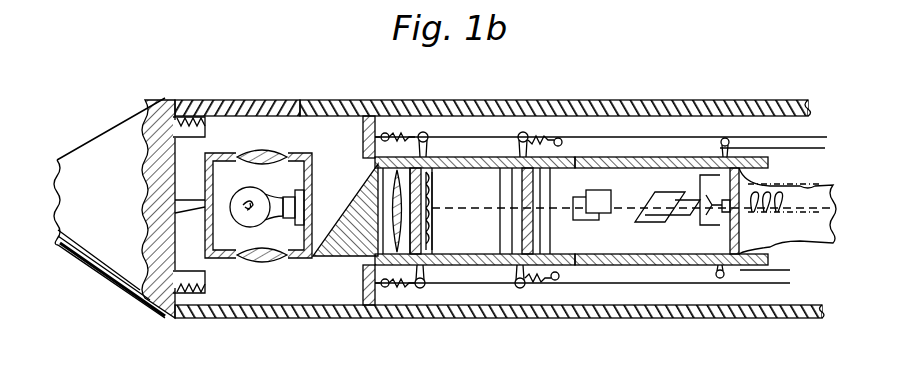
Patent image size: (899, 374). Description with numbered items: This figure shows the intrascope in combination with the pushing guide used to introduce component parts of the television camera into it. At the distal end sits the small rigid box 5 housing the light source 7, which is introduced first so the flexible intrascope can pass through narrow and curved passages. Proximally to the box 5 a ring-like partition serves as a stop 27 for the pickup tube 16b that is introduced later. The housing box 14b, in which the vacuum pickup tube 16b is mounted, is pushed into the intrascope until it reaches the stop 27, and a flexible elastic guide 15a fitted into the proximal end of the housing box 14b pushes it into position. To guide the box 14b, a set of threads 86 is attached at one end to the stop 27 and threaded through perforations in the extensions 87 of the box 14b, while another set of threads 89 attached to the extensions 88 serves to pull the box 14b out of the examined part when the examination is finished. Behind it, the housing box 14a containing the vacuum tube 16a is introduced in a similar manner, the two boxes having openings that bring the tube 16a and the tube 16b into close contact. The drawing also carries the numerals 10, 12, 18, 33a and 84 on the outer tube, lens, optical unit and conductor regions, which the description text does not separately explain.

The box 5 is at (302, 154).
The light source 7 is at (240, 225).
The condenser lens 10 is at (250, 150).
The outer tube 12 is at (250, 100).
The outer tube section 18 is at (340, 100).
The stop 27 is at (370, 147).
The optical unit 33a is at (453, 210).
The housing box 14a is at (670, 157).
The housing box 14b is at (460, 157).
The flexible elastic guide 15a is at (805, 238).
The vacuum tube 16a is at (620, 180).
The vacuum pickup tube 16b is at (485, 240).
The conductor 84 is at (790, 272).
The threads 86 is at (800, 134).
The extensions 87 is at (424, 132).
The extensions 88 is at (525, 132).
The threads 89 is at (795, 150).